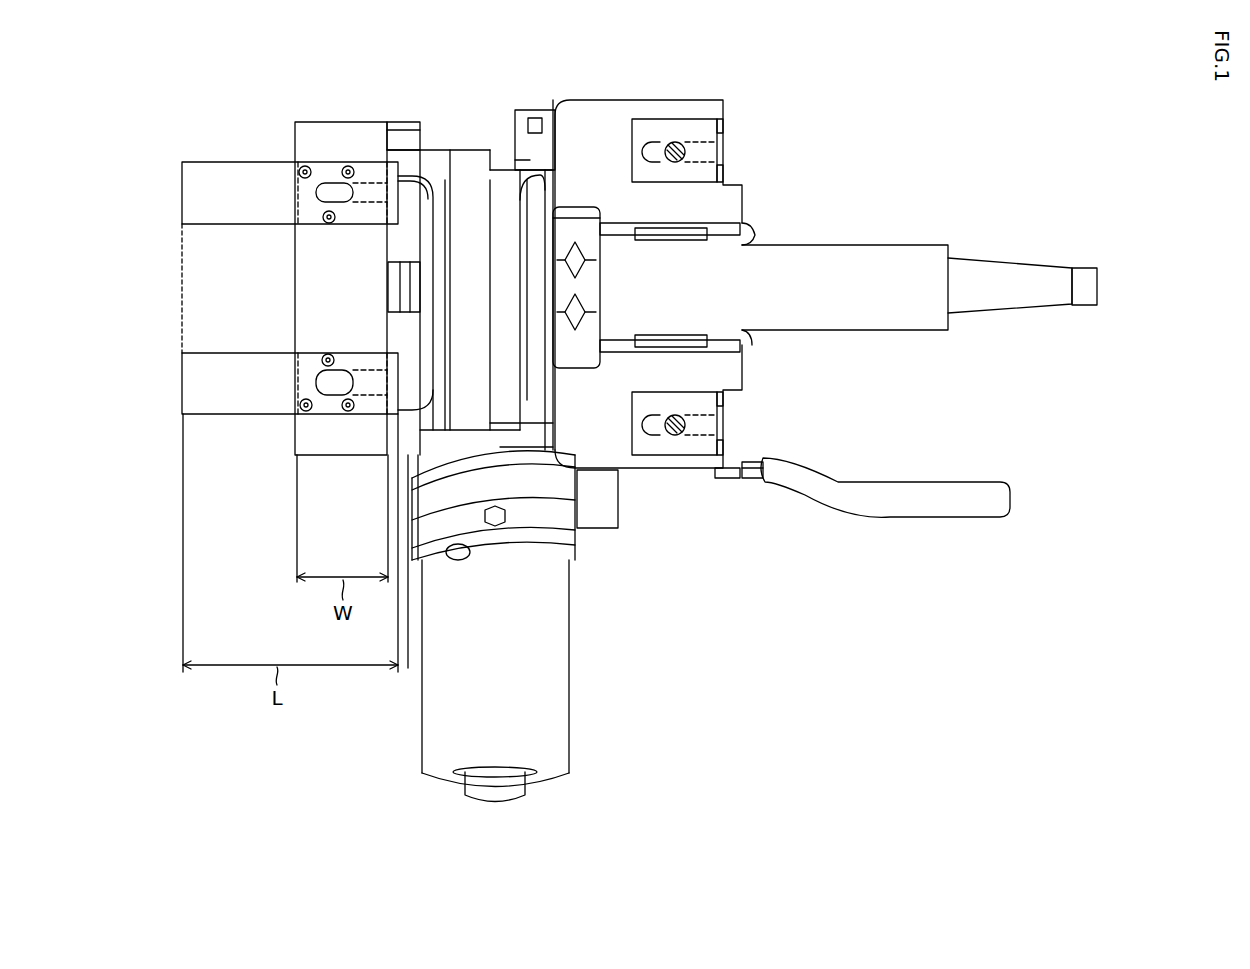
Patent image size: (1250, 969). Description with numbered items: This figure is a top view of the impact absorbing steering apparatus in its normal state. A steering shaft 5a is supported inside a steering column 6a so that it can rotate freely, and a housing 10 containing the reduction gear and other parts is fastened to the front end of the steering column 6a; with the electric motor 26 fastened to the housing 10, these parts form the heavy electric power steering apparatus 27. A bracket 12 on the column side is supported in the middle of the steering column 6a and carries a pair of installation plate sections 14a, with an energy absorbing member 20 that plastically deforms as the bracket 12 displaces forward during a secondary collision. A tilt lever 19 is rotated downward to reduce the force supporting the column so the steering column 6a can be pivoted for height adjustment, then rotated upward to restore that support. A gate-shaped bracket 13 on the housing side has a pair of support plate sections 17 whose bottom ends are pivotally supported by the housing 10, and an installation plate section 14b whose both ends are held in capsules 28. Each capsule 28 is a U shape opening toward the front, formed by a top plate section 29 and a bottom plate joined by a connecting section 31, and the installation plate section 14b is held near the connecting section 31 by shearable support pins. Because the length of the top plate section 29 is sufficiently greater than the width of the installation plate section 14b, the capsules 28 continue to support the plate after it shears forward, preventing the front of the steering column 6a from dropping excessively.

The bracket on the housing side 13 is at (318, 130).
The installation plate section 14b is at (350, 130).
The support plate sections 17 is at (395, 126).
The top plate section 29 is at (220, 175).
The capsules 28 is at (190, 196).
The connecting section 31 is at (392, 197).
The electric power steering apparatus 27 is at (470, 225).
The housing 10 is at (478, 257).
The installation plate sections 14a is at (615, 125).
The energy absorbing member 20 is at (725, 130).
The steering column 6a is at (878, 292).
The steering shaft 5a is at (1025, 275).
The bracket on the column side 12 is at (683, 470).
The tilt lever 19 is at (945, 510).
The electric motor 26 is at (442, 745).